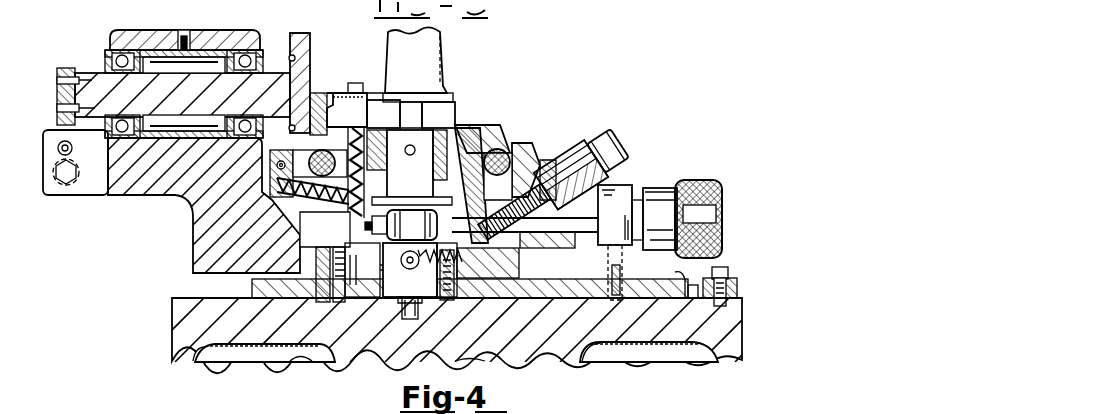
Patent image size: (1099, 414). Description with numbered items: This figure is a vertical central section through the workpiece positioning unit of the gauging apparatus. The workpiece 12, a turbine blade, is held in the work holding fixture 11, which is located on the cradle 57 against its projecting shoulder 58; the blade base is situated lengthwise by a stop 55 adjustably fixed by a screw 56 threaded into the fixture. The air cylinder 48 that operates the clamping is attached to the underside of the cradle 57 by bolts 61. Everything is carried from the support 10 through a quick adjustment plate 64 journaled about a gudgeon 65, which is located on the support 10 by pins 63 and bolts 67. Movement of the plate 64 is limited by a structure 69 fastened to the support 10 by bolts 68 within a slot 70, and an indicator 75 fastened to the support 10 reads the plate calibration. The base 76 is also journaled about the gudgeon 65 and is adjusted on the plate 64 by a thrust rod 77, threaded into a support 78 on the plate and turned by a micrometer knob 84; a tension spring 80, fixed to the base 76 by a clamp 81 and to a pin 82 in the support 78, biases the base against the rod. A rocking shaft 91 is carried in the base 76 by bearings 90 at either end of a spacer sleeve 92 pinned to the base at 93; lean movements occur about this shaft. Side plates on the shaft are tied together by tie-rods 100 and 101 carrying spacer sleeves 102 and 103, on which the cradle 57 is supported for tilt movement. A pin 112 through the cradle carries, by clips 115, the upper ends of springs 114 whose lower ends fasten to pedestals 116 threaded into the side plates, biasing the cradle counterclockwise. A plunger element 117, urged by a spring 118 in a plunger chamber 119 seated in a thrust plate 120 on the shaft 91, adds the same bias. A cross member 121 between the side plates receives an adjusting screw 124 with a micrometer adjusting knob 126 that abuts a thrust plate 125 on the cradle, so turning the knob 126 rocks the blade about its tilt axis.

The support 10 is at (185, 327).
The work holding fixture 11 is at (419, 110).
The workpiece 12 is at (416, 60).
The air cylinder 48 is at (422, 281).
The stop 55 is at (342, 93).
The screw 56 is at (358, 83).
The cradle 57 is at (470, 126).
The projecting shoulder 58 is at (312, 58).
The bolts 61 is at (426, 195).
The pins 63 is at (306, 363).
The quick adjustment plate 64 is at (252, 292).
The gudgeon 65 is at (205, 268).
The bolts 67 is at (488, 361).
The bolts 68 is at (728, 270).
The structure 69 is at (738, 286).
The slot 70 is at (742, 298).
The indicator 75 is at (676, 272).
The base 76 is at (205, 222).
The thrust rod 77 is at (472, 260).
The support 78 is at (620, 242).
The tension spring 80 is at (478, 271).
The clamp 81 is at (386, 281).
The pin 82 is at (590, 355).
The micrometer knob 84 is at (682, 219).
The bearings 90 is at (125, 52).
The rocking shaft 91 is at (184, 94).
The spacer sleeve 92 is at (238, 32).
The pin 93 is at (184, 30).
The tie-rod 100 is at (308, 122).
The tie-rod 101 is at (504, 140).
The spacer sleeve 102 is at (316, 113).
The spacer sleeve 103 is at (507, 133).
The pin 112 is at (347, 110).
The springs 114 is at (325, 257).
The clips 115 is at (384, 114).
The pedestals 116 is at (362, 270).
The plunger element 117 is at (401, 222).
The spring 118 is at (313, 193).
The plunger chamber 119 is at (339, 173).
The thrust plate 120 is at (268, 167).
The cross member 121 is at (540, 123).
The adjusting screw 124 is at (567, 152).
The thrust plate 125 is at (478, 201).
The micrometer adjusting knob 126 is at (600, 140).